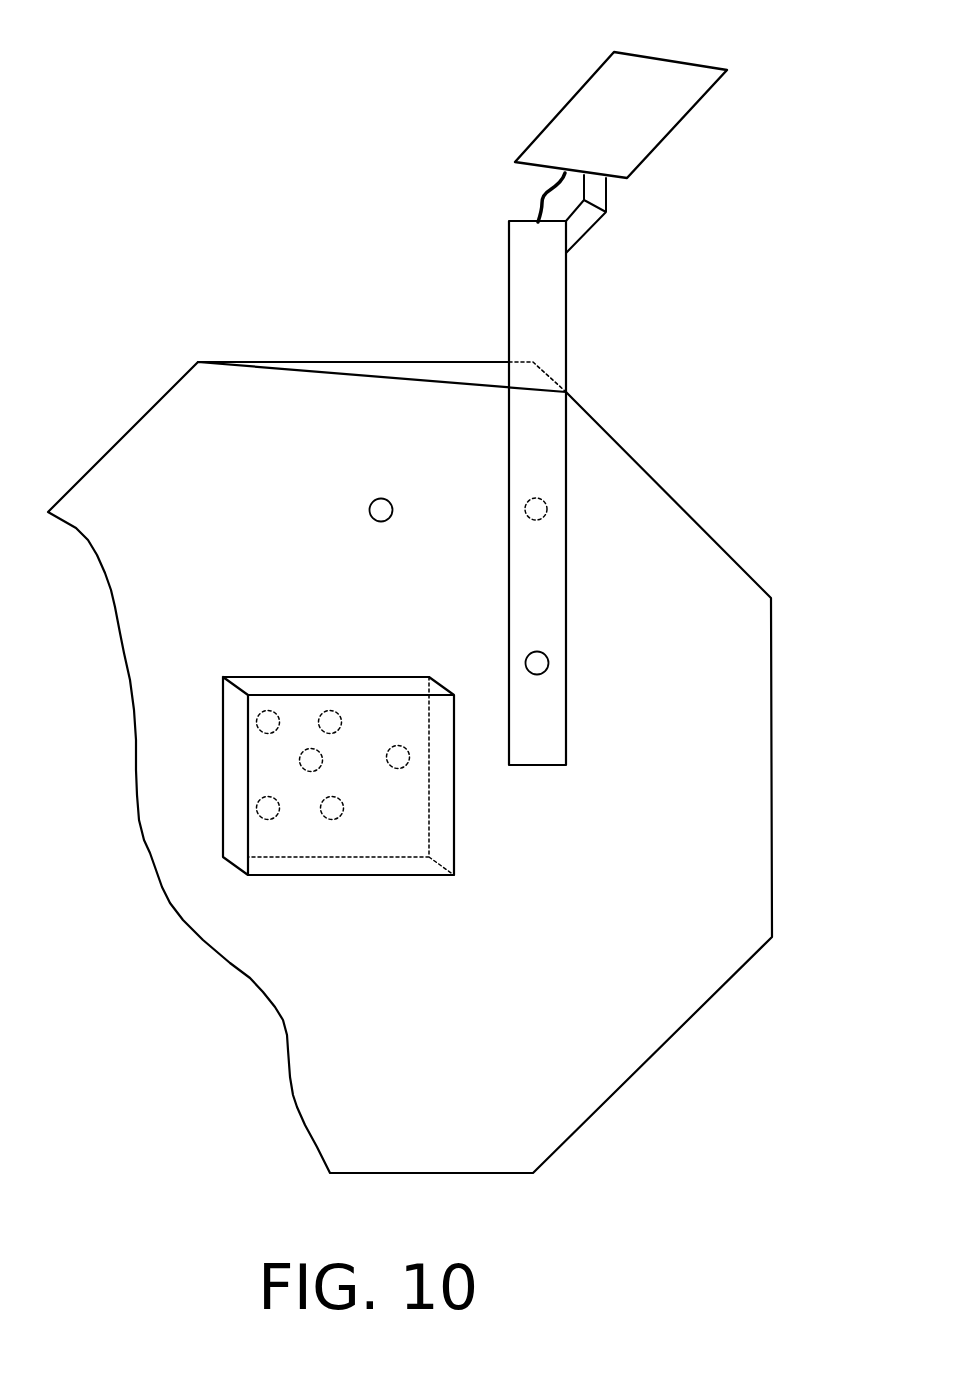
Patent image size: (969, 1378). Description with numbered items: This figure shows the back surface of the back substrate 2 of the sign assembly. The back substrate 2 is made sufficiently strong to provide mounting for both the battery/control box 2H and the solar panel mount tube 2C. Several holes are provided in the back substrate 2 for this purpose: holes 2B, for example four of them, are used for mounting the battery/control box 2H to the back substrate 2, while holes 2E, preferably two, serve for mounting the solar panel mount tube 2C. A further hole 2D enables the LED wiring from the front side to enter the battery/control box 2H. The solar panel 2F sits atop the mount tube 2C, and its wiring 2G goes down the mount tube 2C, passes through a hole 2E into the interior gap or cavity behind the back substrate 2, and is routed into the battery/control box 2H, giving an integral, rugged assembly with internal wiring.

The back substrate 2 is at (645, 472).
The holes 2B is at (257, 817).
The solar panel mount tube 2C is at (509, 275).
The hole 2D is at (300, 763).
The holes 2E is at (400, 745).
The solar panel 2F is at (685, 58).
The wiring 2G is at (543, 197).
The battery/control box 2H is at (348, 877).